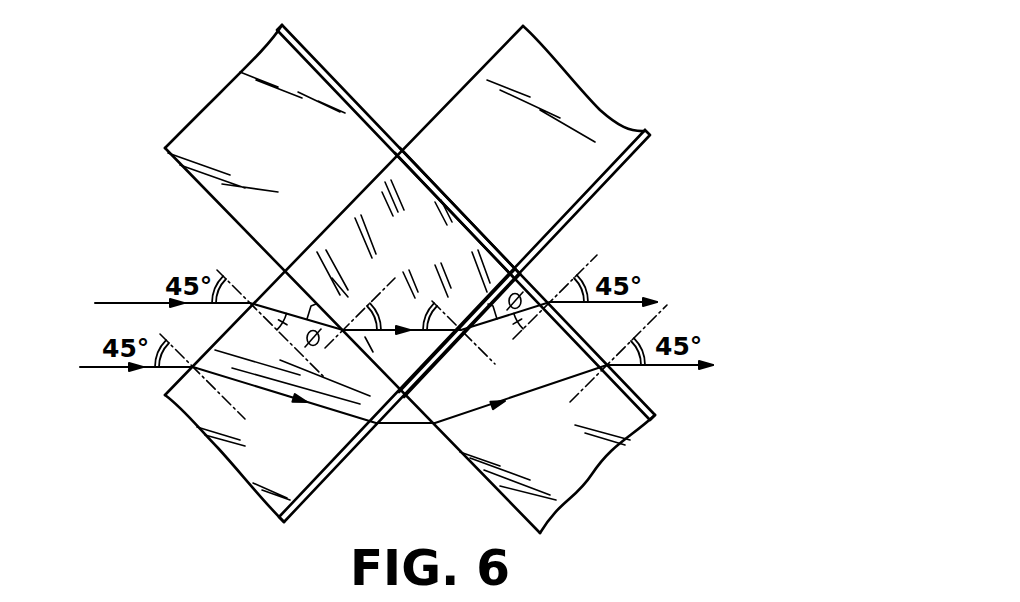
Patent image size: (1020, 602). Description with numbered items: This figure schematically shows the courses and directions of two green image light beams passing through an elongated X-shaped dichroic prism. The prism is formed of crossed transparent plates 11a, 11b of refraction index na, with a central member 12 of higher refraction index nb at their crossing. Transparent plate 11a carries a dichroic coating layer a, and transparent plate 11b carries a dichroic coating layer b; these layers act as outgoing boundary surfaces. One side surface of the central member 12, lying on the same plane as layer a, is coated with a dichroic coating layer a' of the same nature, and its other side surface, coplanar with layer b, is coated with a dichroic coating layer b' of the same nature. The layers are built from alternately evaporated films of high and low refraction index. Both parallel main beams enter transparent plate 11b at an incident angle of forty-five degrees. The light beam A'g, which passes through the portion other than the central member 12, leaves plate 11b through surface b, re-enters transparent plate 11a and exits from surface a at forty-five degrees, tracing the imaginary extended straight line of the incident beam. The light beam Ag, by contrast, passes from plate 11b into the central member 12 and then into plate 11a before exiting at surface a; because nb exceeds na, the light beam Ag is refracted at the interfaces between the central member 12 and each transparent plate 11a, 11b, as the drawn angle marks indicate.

The transparent plate 11a is at (426, 279).
The transparent plate 11b is at (424, 274).
The central member 12 is at (338, 222).
The dichroic coating layer a is at (488, 222).
The dichroic coating layer a' is at (457, 213).
The dichroic coating layer b is at (464, 326).
The dichroic coating layer b' is at (459, 337).
The light beam Ag is at (100, 303).
The light beam A'g is at (361, 375).